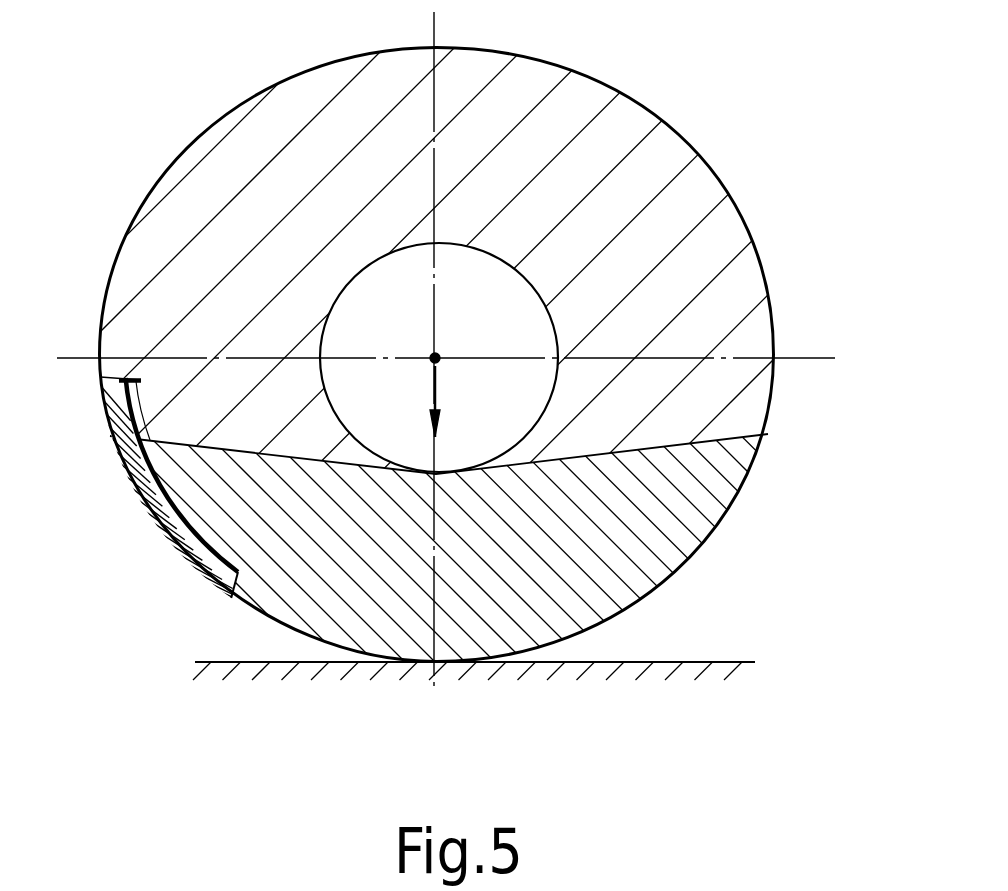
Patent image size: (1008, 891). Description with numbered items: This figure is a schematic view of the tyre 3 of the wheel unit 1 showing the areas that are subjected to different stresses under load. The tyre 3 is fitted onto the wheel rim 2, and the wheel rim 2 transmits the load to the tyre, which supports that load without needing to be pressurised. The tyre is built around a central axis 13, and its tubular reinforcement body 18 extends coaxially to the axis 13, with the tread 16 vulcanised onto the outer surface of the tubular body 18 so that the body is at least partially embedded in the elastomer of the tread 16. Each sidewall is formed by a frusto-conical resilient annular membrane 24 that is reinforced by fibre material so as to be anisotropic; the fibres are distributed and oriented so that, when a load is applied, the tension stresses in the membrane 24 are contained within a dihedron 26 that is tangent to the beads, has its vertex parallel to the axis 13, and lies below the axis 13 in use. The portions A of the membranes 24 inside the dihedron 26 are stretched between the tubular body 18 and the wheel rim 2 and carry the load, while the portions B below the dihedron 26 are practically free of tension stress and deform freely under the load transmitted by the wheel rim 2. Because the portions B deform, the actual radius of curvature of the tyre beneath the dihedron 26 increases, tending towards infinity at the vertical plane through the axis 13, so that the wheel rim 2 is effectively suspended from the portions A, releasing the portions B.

The wheel unit 1 is at (633, 102).
The wheel rim 2 is at (540, 347).
The tyre 3 is at (128, 530).
The axis 13 is at (440, 355).
The tread 16 is at (178, 548).
The tubular reinforcement body 18 is at (81, 374).
The resilient annular membrane 24 is at (675, 210).
The dihedron 26 is at (668, 448).
The portions of the membranes A is at (242, 127).
The portions of the membranes B is at (677, 547).